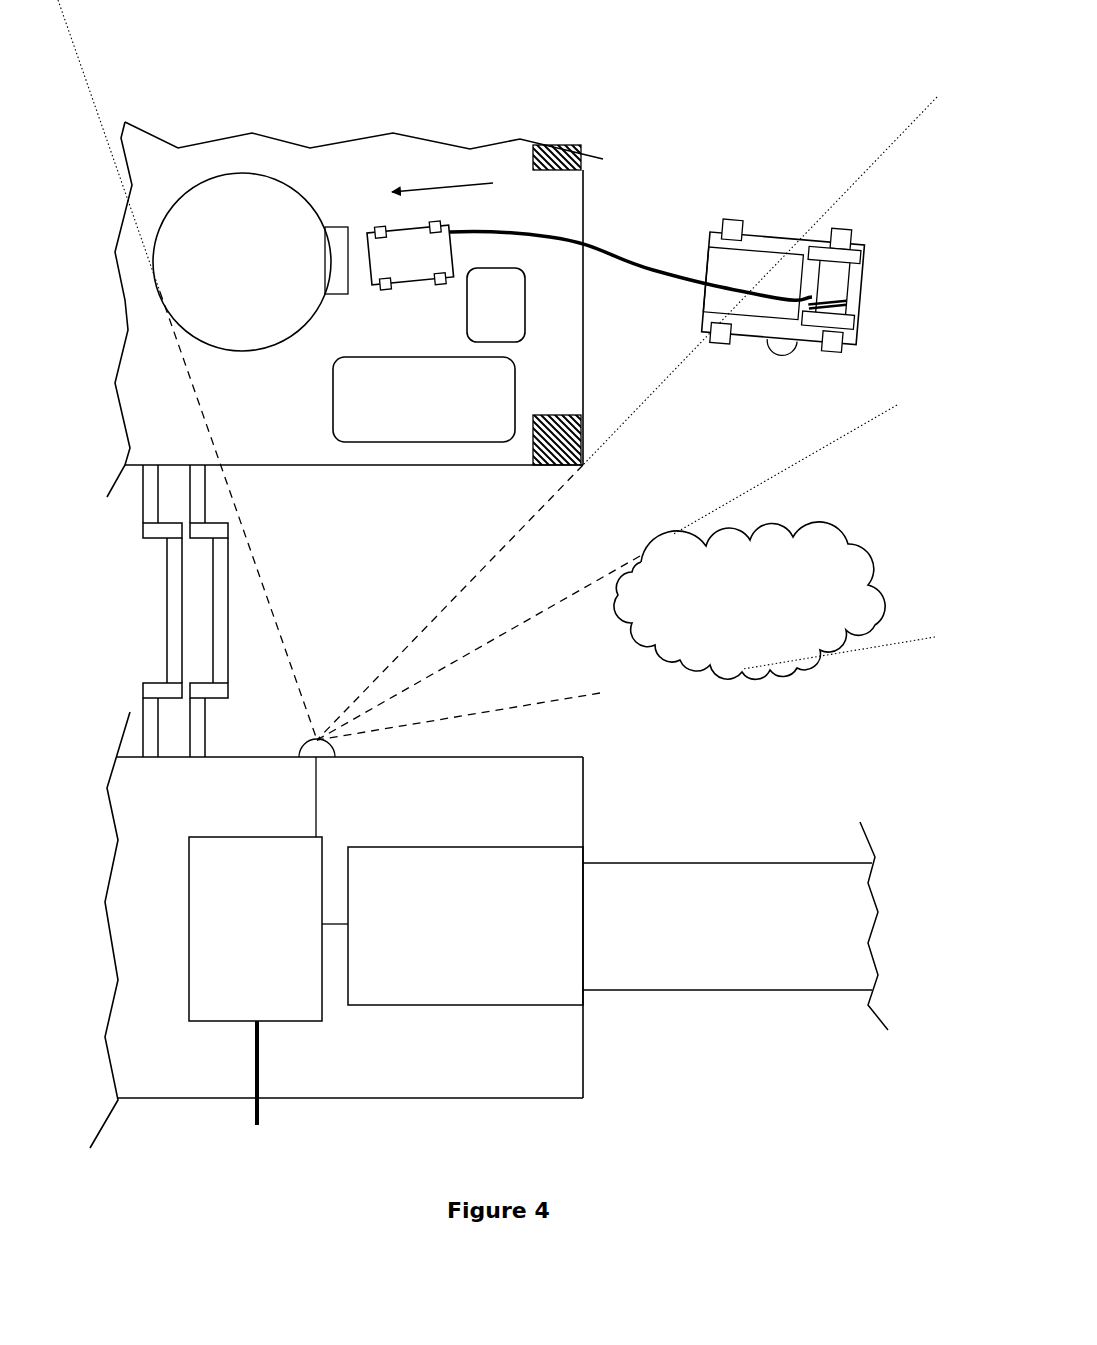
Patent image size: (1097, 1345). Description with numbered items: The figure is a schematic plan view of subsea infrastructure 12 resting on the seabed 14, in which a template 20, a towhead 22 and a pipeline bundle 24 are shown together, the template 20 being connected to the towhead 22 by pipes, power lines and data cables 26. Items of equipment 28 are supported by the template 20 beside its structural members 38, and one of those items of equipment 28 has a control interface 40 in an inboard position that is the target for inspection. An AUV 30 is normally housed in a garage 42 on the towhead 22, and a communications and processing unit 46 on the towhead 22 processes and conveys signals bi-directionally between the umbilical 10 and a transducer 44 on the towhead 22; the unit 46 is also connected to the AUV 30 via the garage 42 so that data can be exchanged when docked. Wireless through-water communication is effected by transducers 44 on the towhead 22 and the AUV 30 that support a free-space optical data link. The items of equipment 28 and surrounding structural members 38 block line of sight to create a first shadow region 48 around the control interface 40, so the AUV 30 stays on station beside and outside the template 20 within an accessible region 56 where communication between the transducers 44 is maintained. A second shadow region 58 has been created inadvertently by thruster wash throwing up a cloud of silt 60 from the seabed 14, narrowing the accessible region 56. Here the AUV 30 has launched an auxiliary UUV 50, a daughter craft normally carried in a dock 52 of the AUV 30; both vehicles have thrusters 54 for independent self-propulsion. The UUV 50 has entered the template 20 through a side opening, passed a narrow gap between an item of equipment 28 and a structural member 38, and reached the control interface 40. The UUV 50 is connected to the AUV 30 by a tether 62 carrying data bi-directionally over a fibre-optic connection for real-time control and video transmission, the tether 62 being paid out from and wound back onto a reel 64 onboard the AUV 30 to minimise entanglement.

The umbilical 10 is at (253, 1112).
The subsea infrastructure 12 is at (614, 84).
The seabed 14 is at (730, 782).
The template 20 is at (413, 148).
The towhead 22 is at (372, 1075).
The pipeline bundle 24 is at (722, 975).
The pipes, power lines and data cables 26 is at (177, 608).
The items of equipment 28 is at (268, 328).
The AUV 30 is at (908, 227).
The structural members 38 is at (548, 170).
The control interface 40 is at (338, 237).
The garage 42 is at (465, 858).
The transducers 44 is at (780, 352).
The communications and processing unit 46 is at (208, 908).
The first shadow region 48 is at (728, 144).
The UUV 50 is at (407, 262).
The dock 52 is at (817, 296).
The thrusters 54 is at (840, 343).
The accessible region 56 is at (698, 462).
The second shadow region 58 is at (938, 525).
The cloud of silt 60 is at (813, 650).
The tether 62 is at (623, 250).
The reel 64 is at (858, 312).